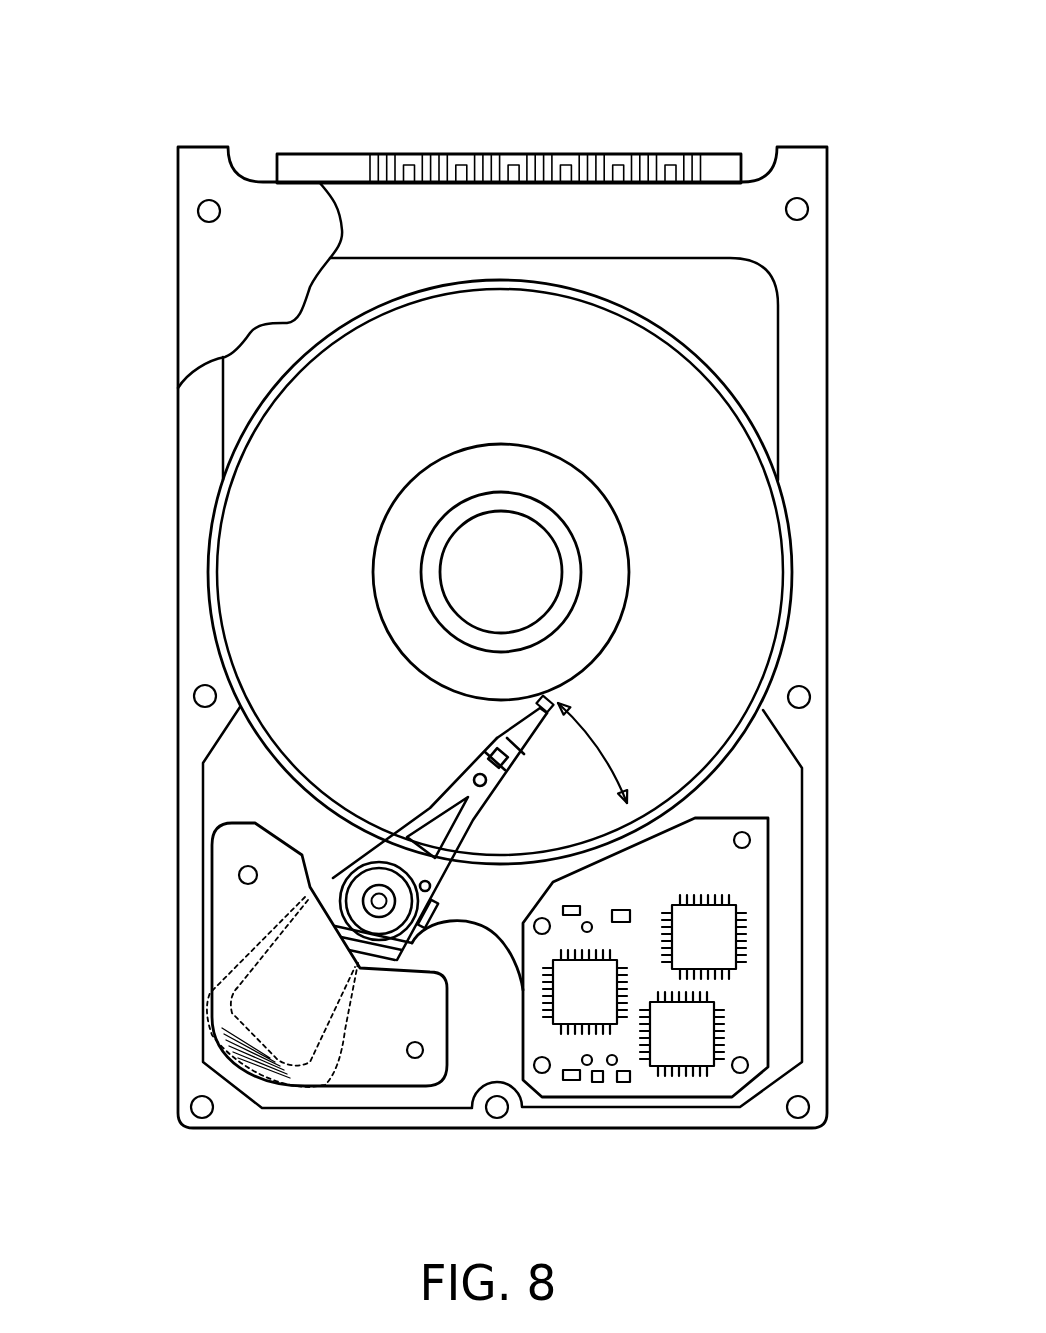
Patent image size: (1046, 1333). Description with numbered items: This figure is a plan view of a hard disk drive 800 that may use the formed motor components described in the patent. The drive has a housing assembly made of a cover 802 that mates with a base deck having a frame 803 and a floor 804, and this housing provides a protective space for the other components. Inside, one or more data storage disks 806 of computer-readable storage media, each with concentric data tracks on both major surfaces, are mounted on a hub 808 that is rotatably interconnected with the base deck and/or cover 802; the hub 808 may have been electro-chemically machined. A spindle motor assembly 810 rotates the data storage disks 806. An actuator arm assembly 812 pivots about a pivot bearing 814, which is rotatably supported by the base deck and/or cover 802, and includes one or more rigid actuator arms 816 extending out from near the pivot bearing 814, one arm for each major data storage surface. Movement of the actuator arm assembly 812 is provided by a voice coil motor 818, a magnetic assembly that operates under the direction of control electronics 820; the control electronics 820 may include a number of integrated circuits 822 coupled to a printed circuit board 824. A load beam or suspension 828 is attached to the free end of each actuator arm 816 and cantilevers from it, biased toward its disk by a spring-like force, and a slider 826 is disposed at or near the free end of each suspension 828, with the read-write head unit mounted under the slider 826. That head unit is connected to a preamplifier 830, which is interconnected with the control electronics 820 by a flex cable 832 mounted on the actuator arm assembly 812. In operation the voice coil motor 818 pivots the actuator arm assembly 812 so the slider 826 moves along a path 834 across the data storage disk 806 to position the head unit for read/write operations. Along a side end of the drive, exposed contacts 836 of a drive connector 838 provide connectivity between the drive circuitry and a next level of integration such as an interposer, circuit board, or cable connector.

The hard disk drive 800 is at (176, 56).
The cover 802 is at (207, 270).
The frame 803 is at (200, 650).
The floor 804 is at (247, 738).
The data storage disk 806 is at (345, 452).
The hub 808 is at (383, 525).
The spindle motor assembly 810 is at (472, 590).
The actuator arm assembly 812 is at (477, 883).
The pivot bearing 814 is at (355, 902).
The actuator arm 816 is at (385, 850).
The voice coil motor 818 is at (181, 1003).
The control electronics 820 is at (530, 1137).
The integrated circuits 822 is at (710, 933).
The printed circuit board 824 is at (738, 999).
The slider 826 is at (557, 693).
The suspension 828 is at (507, 740).
The preamplifier 830 is at (435, 920).
The flex cable 832 is at (426, 908).
The path 834 is at (603, 750).
The exposed contacts 836 is at (699, 157).
The drive connector 838 is at (285, 165).